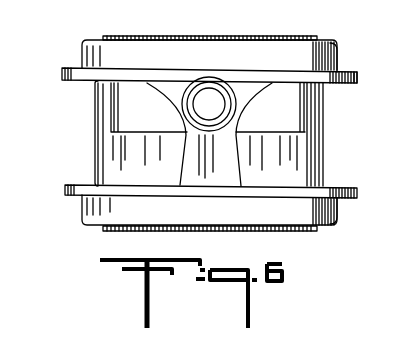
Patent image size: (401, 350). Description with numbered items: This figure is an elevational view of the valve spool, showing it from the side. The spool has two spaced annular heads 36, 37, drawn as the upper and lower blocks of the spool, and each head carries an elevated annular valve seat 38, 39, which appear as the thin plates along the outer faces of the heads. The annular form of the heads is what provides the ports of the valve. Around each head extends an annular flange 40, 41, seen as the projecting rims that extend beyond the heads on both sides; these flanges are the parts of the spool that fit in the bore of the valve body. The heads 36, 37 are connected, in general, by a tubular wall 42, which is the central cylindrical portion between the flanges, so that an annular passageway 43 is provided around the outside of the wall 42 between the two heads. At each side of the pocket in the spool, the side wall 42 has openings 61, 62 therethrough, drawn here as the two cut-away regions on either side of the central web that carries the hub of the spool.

The annular head 36 is at (339, 58).
The annular head 37 is at (335, 227).
The elevated annular valve seat 38 is at (306, 39).
The elevated annular valve seat 39 is at (304, 233).
The annular flange 40 is at (357, 78).
The annular flange 41 is at (376, 68).
The tubular wall 42 is at (323, 145).
The annular passageway 43 is at (77, 118).
The opening 61 is at (152, 126).
The opening 62 is at (258, 123).